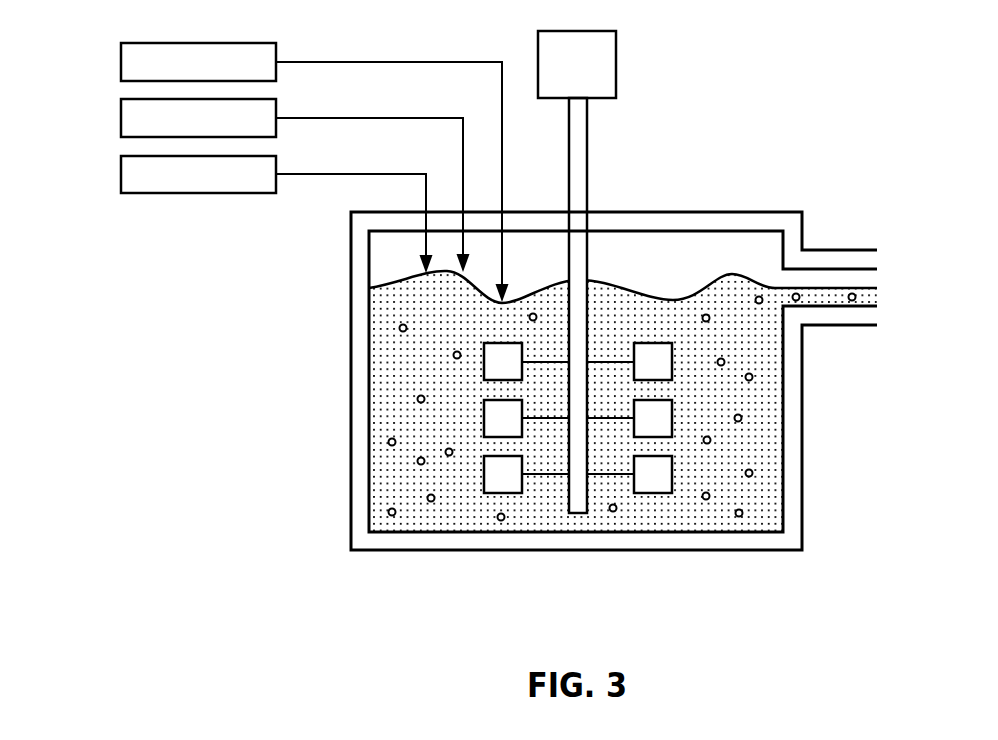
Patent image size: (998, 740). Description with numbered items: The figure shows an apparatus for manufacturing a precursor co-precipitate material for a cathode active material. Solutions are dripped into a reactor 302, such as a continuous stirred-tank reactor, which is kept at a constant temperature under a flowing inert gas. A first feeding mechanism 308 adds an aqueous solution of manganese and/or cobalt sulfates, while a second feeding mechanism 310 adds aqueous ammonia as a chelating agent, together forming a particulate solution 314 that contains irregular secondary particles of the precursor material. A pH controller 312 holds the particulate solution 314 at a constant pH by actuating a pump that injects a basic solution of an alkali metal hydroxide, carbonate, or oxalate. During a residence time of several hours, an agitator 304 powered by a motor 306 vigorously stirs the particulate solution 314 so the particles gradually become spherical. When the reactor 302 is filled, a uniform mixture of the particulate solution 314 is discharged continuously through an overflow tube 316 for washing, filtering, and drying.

The reactor 302 is at (313, 212).
The agitator 304 is at (576, 498).
The motor 306 is at (577, 64).
The first feeding mechanism 308 is at (315, 172).
The second feeding mechanism 310 is at (295, 185).
The pH controller 312 is at (277, 214).
The particulate solution 314 is at (763, 498).
The overflow tube 316 is at (895, 248).